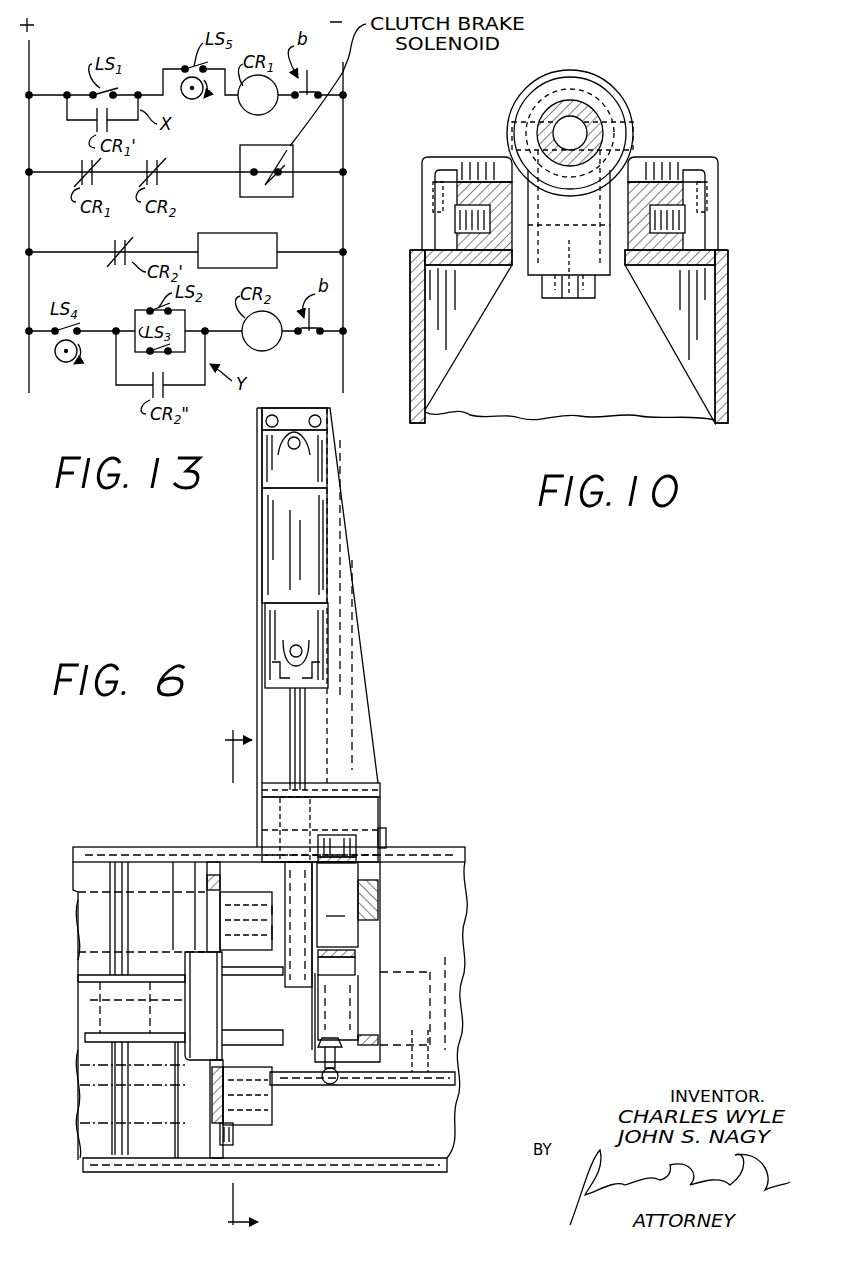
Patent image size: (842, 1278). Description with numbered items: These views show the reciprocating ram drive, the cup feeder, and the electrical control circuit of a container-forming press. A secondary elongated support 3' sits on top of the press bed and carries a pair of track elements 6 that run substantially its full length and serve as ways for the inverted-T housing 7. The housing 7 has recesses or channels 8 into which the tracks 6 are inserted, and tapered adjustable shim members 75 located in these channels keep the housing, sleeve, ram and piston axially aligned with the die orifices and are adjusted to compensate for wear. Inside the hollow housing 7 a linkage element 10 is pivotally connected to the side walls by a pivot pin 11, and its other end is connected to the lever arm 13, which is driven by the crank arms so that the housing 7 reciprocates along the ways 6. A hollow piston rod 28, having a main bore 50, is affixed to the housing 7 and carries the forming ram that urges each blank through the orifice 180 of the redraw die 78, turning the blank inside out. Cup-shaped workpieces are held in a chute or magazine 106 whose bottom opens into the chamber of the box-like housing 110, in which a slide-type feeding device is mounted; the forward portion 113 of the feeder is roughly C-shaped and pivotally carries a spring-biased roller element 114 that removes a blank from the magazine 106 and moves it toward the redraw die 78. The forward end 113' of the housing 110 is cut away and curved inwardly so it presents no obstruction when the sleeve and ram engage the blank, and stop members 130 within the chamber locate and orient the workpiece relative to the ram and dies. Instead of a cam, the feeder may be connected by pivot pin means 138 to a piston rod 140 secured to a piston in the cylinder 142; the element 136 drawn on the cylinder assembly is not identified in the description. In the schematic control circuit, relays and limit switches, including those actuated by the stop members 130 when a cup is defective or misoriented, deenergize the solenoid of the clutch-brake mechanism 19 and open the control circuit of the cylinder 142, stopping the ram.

In FIG. 10, the secondary elongated support 3' is at (590, 336).
In FIG. 6, the secondary elongated support 3' is at (270, 991).
In FIG. 10, the track elements 6 is at (500, 170).
In FIG. 6, the track elements 6 is at (90, 918).
In FIG. 10, the housing 7 is at (565, 66).
In FIG. 6, the housing 7 is at (238, 968).
In FIG. 10, the recesses or channels 8 is at (440, 158).
In FIG. 10, the linkage element 10 is at (618, 140).
In FIG. 10, the pivot pin 11 is at (610, 125).
In FIG. 10, the lever arm 13 is at (575, 295).
In FIG. 13, the override clutch and braking mechanism 19 is at (266, 200).
In FIG. 10, the piston rod 28 is at (590, 92).
In FIG. 10, the main bore 50 is at (588, 118).
In FIG. 10, the shim members 75 is at (450, 178).
In FIG. 6, the shim members 75 is at (215, 910).
In FIG. 6, the redraw die 78 is at (410, 1080).
In FIG. 6, the chute or magazine 106 is at (362, 848).
In FIG. 6, the box-like housing 110 is at (382, 828).
In FIG. 6, the forward portion of feeding device 113 is at (294, 956).
In FIG. 6, the forward end of housing 113' is at (432, 929).
In FIG. 6, the roller element 114 is at (372, 938).
In FIG. 6, the stop members 130 is at (330, 1086).
In FIG. 6, the piston 136 is at (333, 618).
In FIG. 6, the pivot pin means 138 is at (322, 820).
In FIG. 6, the piston rod 140 is at (305, 716).
In FIG. 13, the cylinder 142 is at (252, 262).
In FIG. 6, the cylinder 142 is at (305, 553).
In FIG. 6, the orifice of redraw die 180 is at (415, 985).